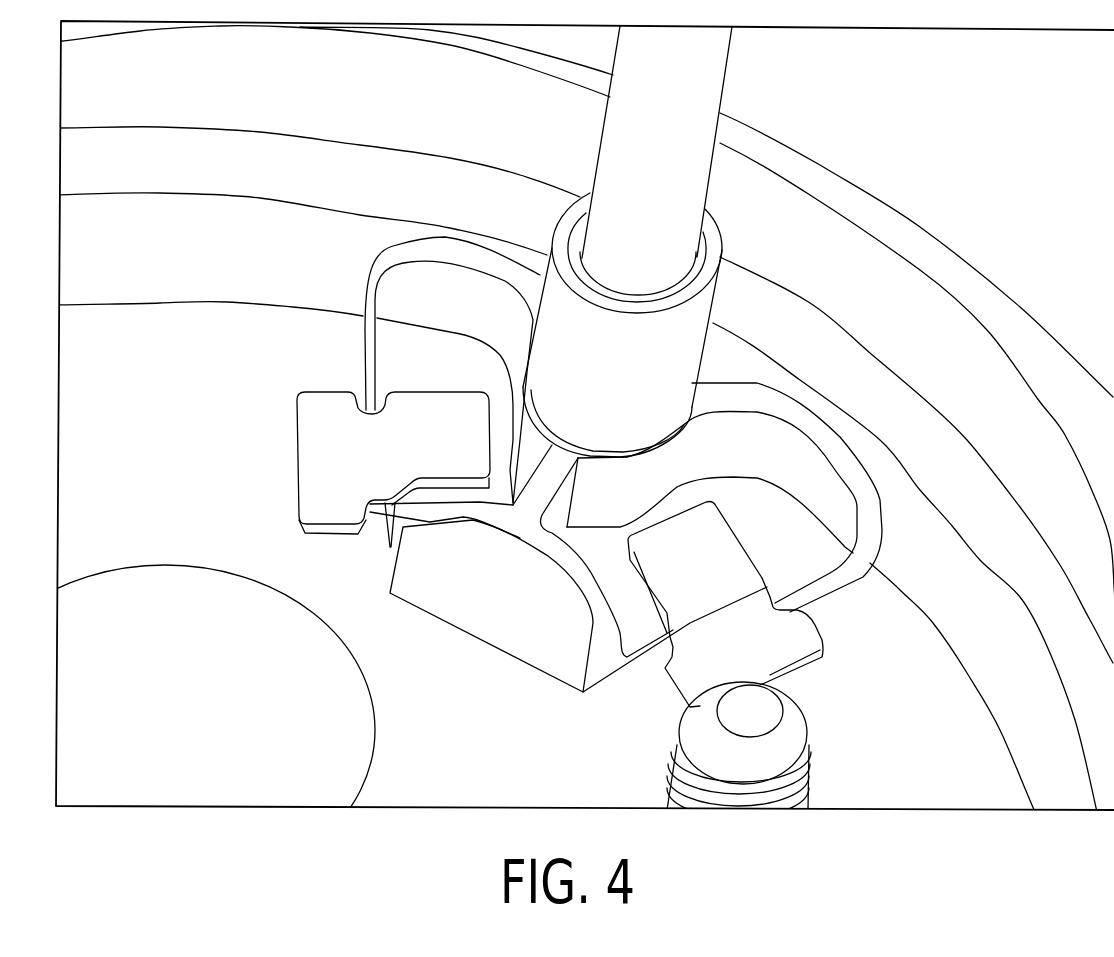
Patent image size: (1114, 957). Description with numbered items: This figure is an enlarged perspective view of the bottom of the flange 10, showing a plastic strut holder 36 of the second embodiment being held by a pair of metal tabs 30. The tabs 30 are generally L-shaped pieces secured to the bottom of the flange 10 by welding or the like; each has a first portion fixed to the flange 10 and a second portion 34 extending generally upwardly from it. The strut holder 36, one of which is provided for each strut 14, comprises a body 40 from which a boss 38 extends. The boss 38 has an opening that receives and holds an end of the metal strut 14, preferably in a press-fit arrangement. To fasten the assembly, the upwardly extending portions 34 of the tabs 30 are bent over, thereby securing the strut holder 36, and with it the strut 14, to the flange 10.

The flange 10 is at (926, 747).
The strut 14 is at (656, 223).
The metal tabs 30 is at (557, 605).
The second portion 34 is at (456, 451).
The plastic strut holder 36 is at (486, 622).
The boss 38 is at (631, 398).
The body 40 is at (795, 547).